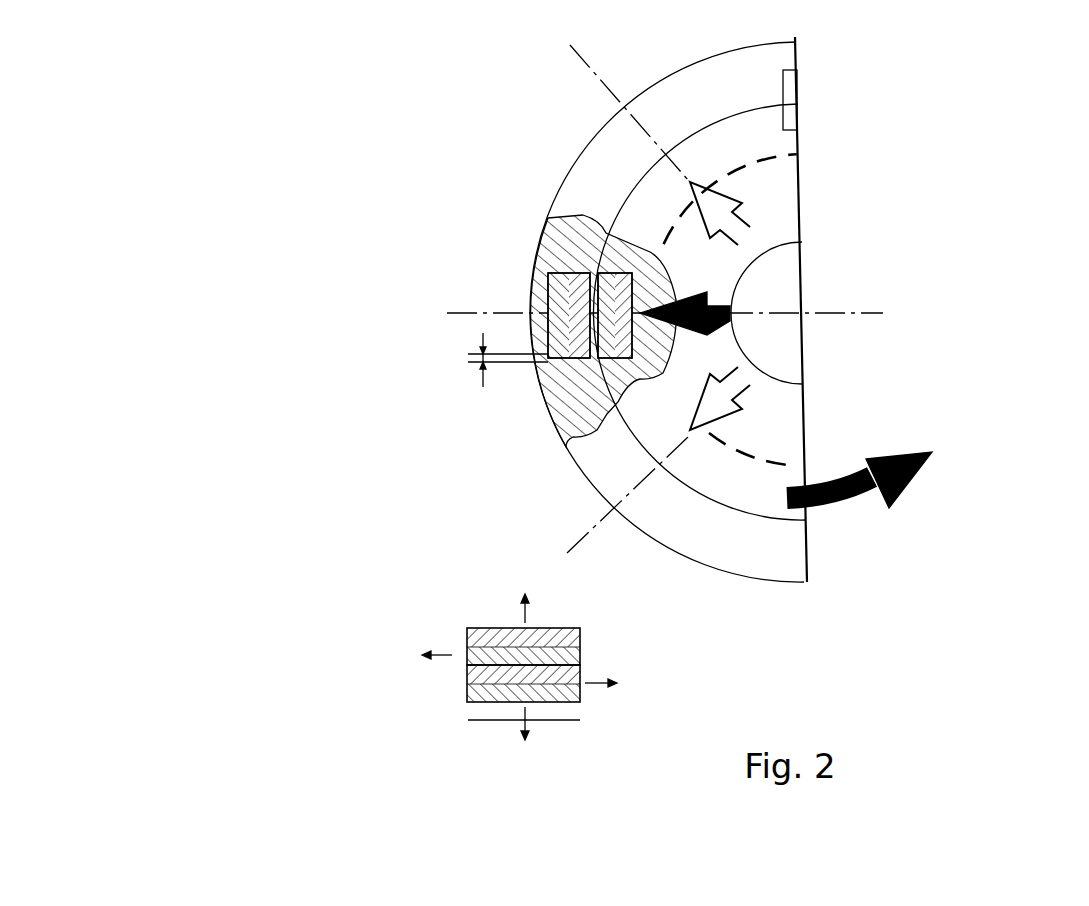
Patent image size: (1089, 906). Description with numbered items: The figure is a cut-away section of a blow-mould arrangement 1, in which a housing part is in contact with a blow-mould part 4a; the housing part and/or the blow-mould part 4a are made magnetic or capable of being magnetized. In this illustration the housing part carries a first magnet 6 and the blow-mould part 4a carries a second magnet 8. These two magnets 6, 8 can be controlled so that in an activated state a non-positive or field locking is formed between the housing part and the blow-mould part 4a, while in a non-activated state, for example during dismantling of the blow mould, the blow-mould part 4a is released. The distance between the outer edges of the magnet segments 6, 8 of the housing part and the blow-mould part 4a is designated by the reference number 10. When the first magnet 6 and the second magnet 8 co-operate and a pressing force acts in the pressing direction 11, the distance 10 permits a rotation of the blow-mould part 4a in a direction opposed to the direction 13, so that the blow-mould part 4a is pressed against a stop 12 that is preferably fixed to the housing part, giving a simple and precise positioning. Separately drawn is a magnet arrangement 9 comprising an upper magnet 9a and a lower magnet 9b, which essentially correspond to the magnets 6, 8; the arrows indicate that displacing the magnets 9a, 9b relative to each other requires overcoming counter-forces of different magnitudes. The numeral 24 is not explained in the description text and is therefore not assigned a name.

The blow-mould arrangement 1 is at (533, 309).
The blow-mould part 4a is at (816, 310).
The first magnet 6 is at (452, 282).
The second magnet 8 is at (768, 331).
The magnet arrangement 9 is at (429, 651).
The upper magnet 9a is at (510, 600).
The lower magnet 9b is at (464, 716).
The distance 10 is at (483, 362).
The pressing direction 11 is at (787, 313).
The stop 12 is at (875, 80).
The direction 13 is at (931, 509).
The stator housing 24 is at (559, 312).